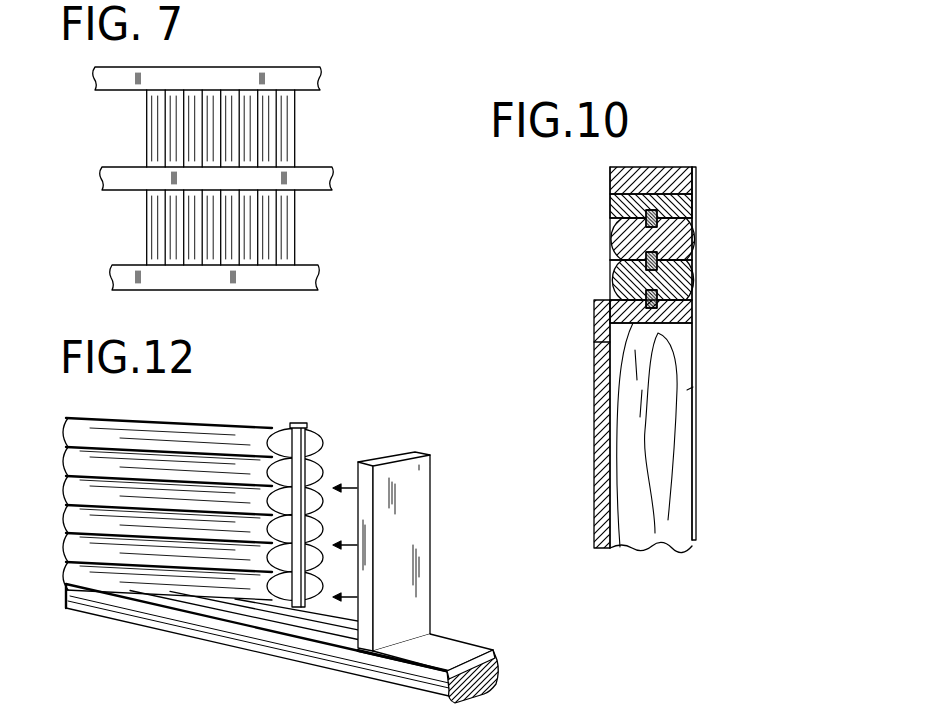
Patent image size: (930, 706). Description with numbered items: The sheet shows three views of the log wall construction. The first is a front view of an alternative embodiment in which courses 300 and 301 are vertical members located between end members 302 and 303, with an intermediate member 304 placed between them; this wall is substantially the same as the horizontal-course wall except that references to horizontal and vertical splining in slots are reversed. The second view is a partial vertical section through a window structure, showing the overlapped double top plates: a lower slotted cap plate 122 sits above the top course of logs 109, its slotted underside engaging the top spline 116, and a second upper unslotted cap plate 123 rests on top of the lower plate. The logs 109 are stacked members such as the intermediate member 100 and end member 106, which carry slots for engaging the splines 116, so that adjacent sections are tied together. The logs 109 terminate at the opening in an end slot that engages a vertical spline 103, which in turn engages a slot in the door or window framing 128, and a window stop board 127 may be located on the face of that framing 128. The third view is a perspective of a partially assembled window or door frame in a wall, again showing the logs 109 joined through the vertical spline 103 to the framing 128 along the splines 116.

In FIG. 7, the course 300 is at (313, 229).
In FIG. 7, the course 301 is at (315, 127).
In FIG. 7, the end member 302 is at (320, 281).
In FIG. 7, the end member 303 is at (298, 78).
In FIG. 7, the intermediate member 304 is at (333, 183).
In FIG. 12, the vertical spline 103 is at (298, 447).
In FIG. 10, the log 109 is at (617, 234).
In FIG. 12, the log 109 is at (153, 600).
In FIG. 10, the spline 116 is at (696, 246).
In FIG. 12, the spline 116 is at (315, 617).
In FIG. 10, the lower slotted cap plate 122 is at (700, 206).
In FIG. 10, the upper unslotted cap plate 123 is at (687, 182).
In FIG. 10, the window stop board 127 is at (593, 398).
In FIG. 10, the door/window framing 128 is at (683, 398).
In FIG. 12, the door/window framing 128 is at (375, 655).
In FIG. 10, the intermediate member 100 is at (610, 262).
In FIG. 10, the end member 106 is at (610, 262).